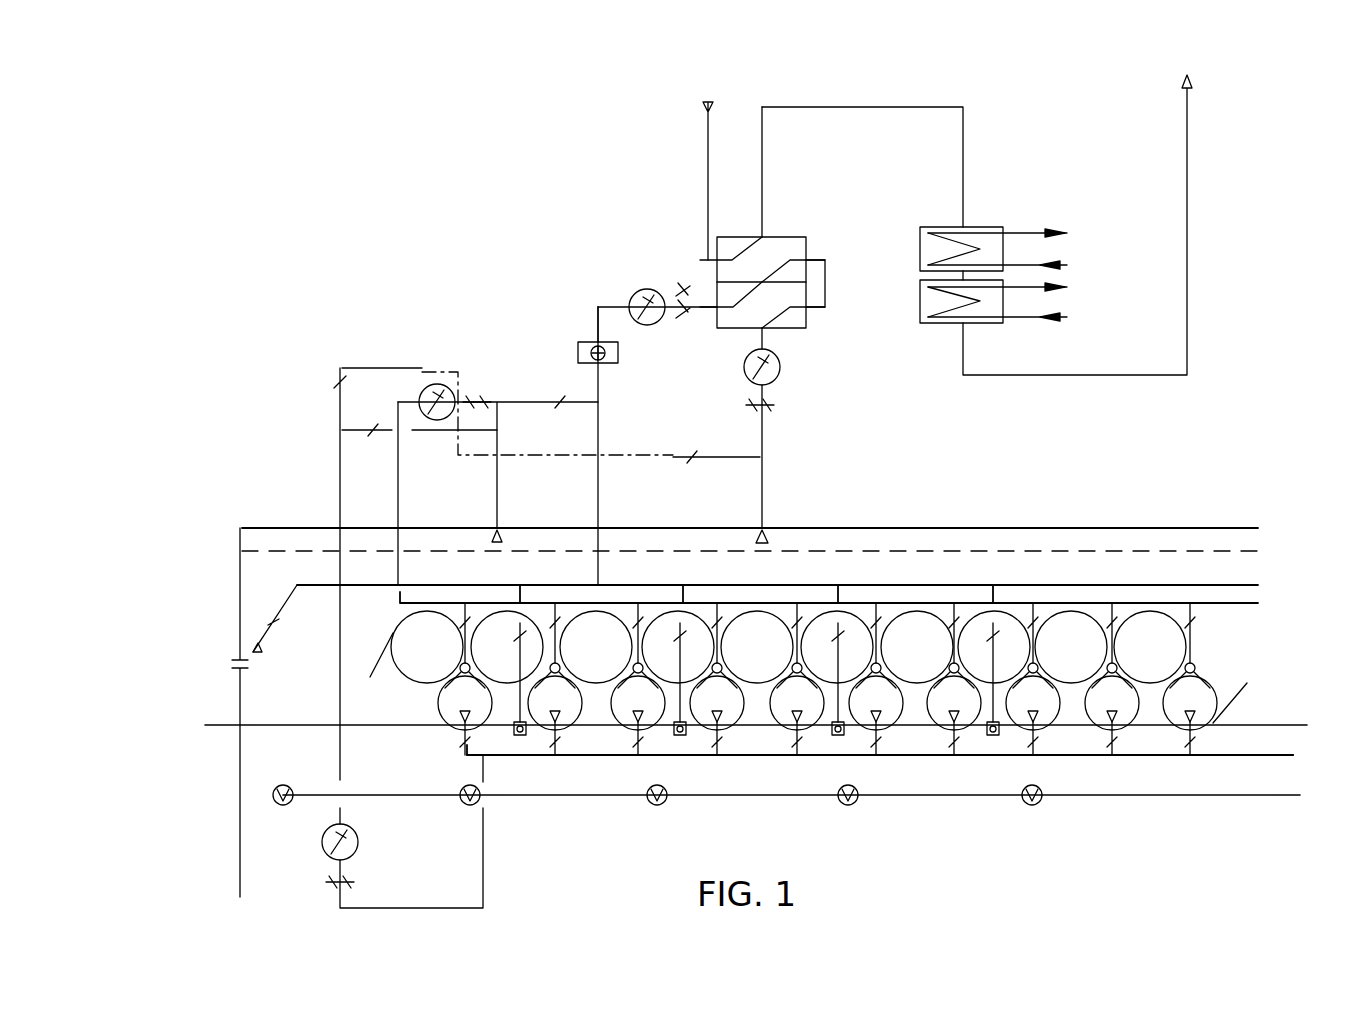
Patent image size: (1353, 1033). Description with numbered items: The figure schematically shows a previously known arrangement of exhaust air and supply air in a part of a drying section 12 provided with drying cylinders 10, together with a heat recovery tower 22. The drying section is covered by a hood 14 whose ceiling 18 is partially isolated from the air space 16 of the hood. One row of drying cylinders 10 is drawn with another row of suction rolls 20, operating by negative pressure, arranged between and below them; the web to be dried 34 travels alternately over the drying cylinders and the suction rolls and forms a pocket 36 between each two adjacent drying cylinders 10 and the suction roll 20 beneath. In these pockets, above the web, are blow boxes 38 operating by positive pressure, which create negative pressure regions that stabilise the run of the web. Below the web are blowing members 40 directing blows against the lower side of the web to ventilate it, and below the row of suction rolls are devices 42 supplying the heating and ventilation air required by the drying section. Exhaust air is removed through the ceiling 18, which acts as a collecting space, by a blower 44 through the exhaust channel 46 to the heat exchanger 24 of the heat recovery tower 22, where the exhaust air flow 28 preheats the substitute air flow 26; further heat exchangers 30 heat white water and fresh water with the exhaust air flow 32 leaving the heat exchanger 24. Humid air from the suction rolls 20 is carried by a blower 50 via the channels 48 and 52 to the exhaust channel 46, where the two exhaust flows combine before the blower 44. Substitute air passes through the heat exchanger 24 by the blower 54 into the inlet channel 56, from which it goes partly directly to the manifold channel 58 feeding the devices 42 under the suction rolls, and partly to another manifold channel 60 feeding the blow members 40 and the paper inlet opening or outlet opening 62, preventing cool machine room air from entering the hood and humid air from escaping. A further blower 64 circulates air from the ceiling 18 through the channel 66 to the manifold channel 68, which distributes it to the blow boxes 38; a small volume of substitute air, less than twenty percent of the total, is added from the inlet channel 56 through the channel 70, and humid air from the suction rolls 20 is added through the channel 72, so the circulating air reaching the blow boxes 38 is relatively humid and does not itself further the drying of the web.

The drying cylinders 10 is at (788, 647).
The drying section 12 is at (1255, 420).
The hood 14 is at (1230, 527).
The air space of the hood 16 is at (880, 698).
The ceiling 18 is at (1165, 540).
The suction rolls 20 is at (827, 715).
The heat recovery tower 22 is at (605, 133).
The heat exchanger 24 is at (793, 217).
The substitute air flow 26 is at (698, 300).
The exhaust air flow 28 is at (762, 343).
The heat exchangers 30 is at (1008, 195).
The exhaust air flow from the heat exchanger 32 is at (930, 103).
The web to be dried 34 is at (378, 657).
The pocket 36 is at (1118, 620).
The blow boxes 38 is at (1128, 683).
The blowing members 40 is at (999, 738).
The devices supplying heating and ventilation air 42 is at (1042, 800).
The blower 44 is at (765, 373).
The exhaust channel 46 is at (760, 473).
The channel 48 is at (595, 757).
The blower 50 is at (335, 842).
The channel 52 is at (340, 458).
The blower 54 is at (647, 288).
The inlet channel 56 is at (608, 300).
The manifold channel 58 is at (890, 798).
The manifold channel 60 is at (630, 585).
The paper inlet opening or outlet opening 62 is at (237, 658).
The blower 64 is at (447, 380).
The channel 66 is at (398, 528).
The manifold channel 68 is at (897, 603).
The channel 70 is at (530, 400).
The channel 72 is at (355, 430).